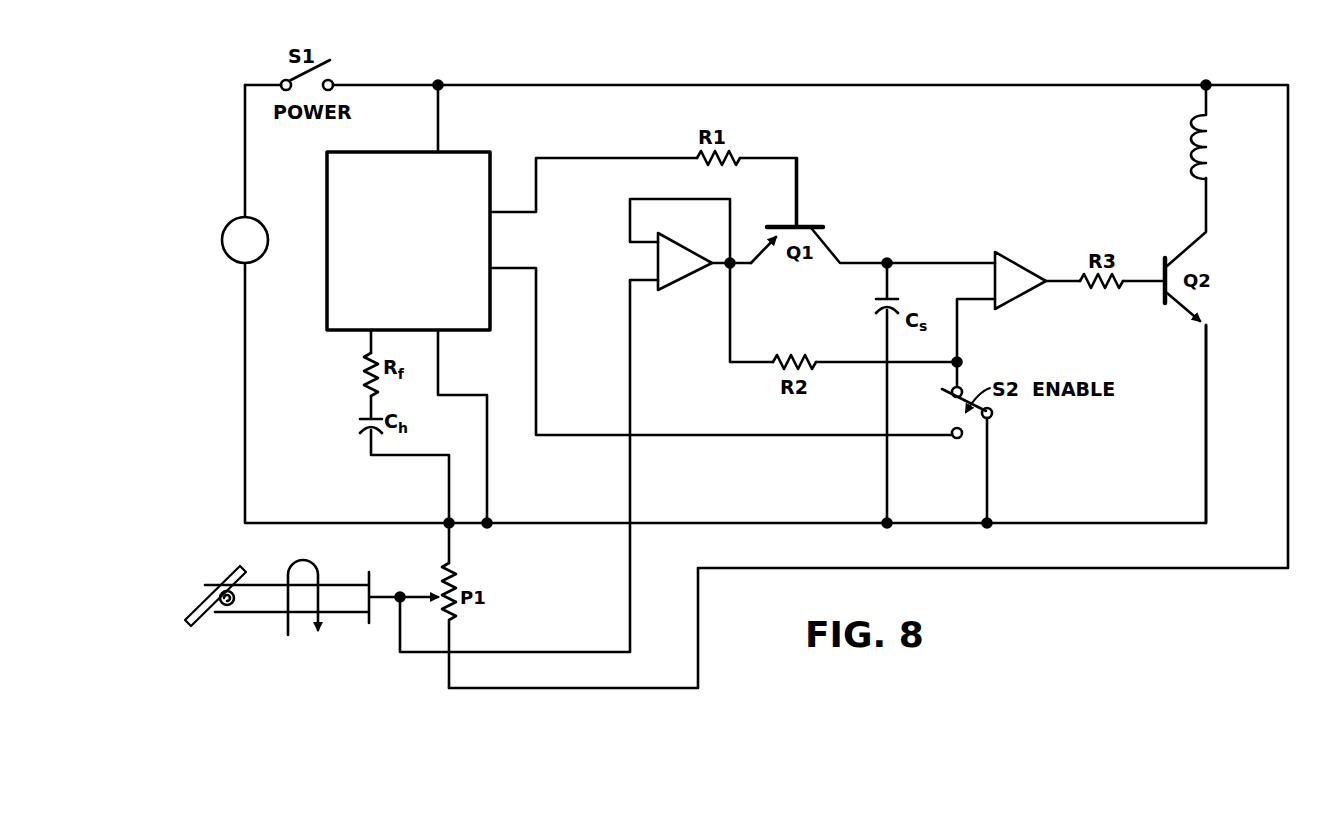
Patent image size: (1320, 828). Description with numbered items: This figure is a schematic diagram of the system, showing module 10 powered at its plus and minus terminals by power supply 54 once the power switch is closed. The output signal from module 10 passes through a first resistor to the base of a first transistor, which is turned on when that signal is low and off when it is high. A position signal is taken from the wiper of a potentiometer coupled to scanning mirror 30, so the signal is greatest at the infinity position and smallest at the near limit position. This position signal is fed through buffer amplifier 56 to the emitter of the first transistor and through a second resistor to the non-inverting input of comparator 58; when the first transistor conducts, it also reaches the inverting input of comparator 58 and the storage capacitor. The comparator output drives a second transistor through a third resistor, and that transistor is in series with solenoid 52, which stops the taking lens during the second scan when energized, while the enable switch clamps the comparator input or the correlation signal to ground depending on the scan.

The module 10 is at (360, 152).
The scanning mirror 30 is at (199, 624).
The solenoid 52 is at (1220, 138).
The power supply 54 is at (257, 222).
The buffer amplifier 56 is at (688, 282).
The comparator 58 is at (1025, 264).